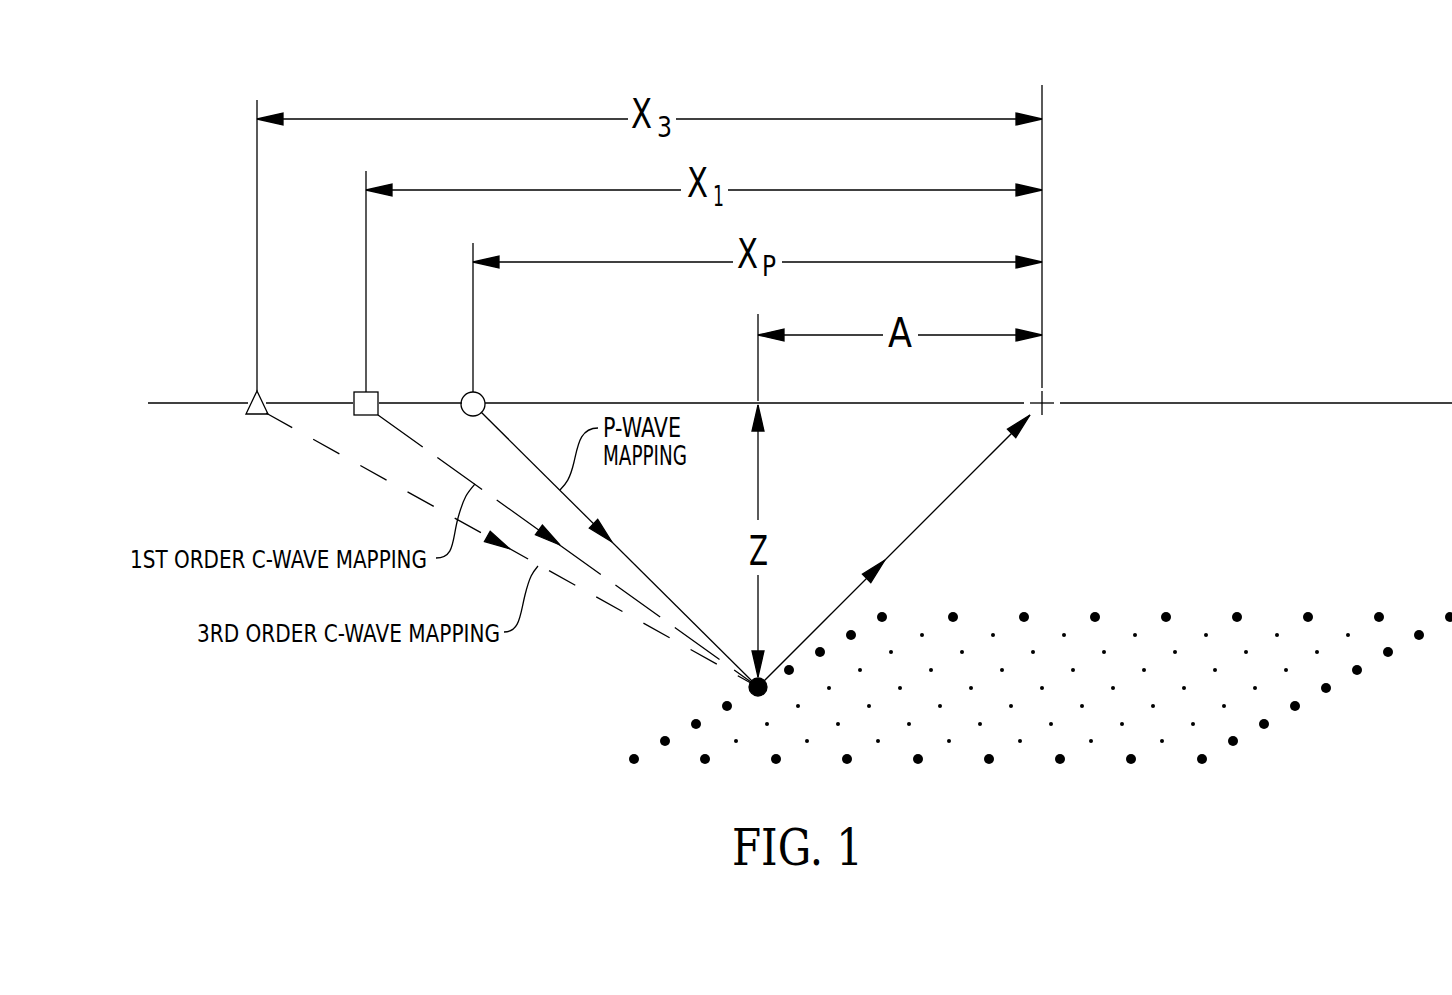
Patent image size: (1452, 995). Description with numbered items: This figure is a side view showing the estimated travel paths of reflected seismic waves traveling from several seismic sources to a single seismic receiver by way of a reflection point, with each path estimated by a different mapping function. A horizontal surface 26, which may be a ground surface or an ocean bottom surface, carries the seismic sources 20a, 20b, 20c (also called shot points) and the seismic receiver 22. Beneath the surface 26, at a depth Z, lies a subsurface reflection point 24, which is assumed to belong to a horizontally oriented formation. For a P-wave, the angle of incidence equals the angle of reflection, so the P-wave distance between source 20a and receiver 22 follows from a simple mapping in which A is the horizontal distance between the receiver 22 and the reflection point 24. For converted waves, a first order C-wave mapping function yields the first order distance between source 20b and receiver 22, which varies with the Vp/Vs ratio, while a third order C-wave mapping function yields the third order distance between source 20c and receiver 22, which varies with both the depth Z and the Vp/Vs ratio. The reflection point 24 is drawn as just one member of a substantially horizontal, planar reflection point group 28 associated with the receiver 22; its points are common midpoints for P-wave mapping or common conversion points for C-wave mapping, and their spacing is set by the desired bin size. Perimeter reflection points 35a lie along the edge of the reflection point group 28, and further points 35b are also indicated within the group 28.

The seismic source 20a is at (465, 395).
The seismic source 20b is at (354, 393).
The seismic source 20c is at (252, 397).
The seismic receiver 22 is at (1052, 396).
The reflection point 24 is at (748, 687).
The surface 26 is at (1266, 403).
The reflection point group 28 is at (997, 775).
The perimeter reflection points 35a is at (953, 617).
The bin centers (fine) 35b is at (1104, 652).